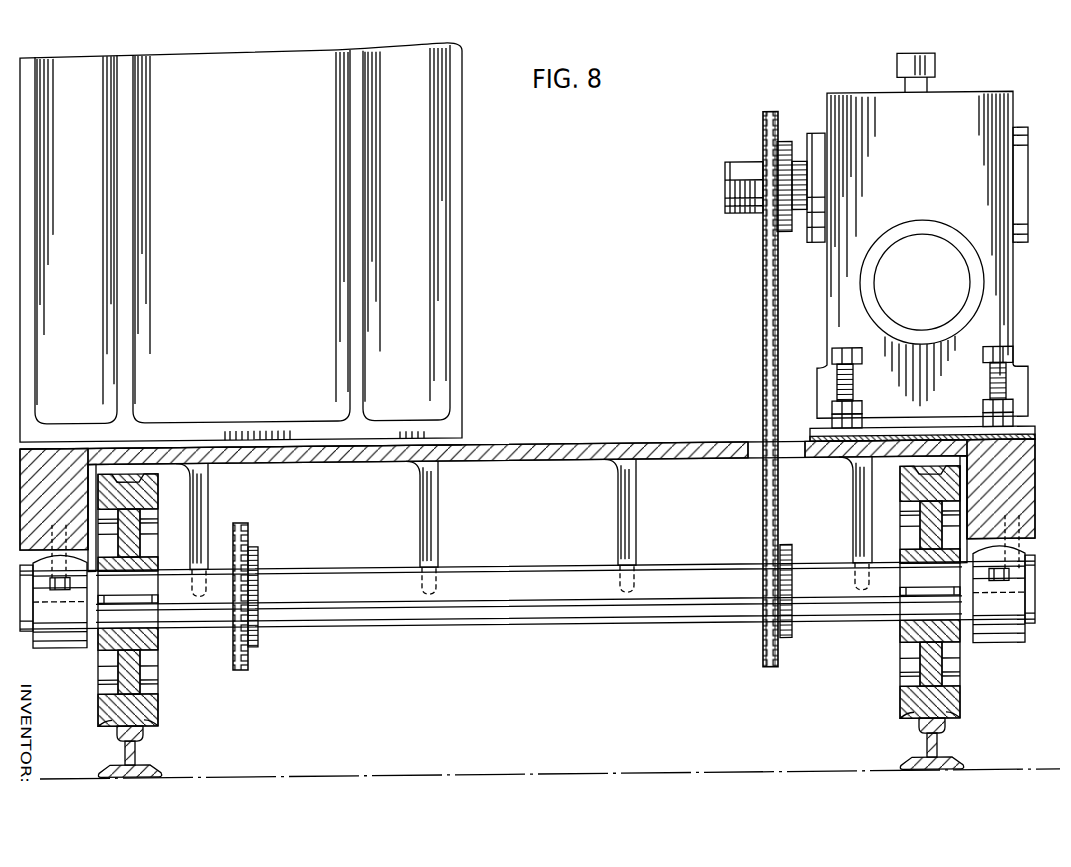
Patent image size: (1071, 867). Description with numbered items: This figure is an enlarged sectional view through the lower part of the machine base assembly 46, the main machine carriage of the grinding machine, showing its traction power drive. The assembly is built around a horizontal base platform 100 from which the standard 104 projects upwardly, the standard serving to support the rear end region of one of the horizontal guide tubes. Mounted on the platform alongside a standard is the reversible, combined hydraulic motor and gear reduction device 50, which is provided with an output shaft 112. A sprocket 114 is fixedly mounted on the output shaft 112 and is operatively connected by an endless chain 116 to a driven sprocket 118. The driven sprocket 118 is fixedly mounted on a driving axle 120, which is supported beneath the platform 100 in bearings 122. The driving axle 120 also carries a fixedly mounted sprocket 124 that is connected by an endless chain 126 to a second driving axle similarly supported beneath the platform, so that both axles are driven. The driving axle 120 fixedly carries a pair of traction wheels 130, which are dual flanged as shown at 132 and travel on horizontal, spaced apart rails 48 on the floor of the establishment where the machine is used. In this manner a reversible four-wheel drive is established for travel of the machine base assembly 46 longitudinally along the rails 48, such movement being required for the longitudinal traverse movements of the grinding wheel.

The machine base assembly 46 is at (250, 202).
The standard 104 is at (430, 231).
The combined hydraulic motor and gear reduction device 50 is at (938, 175).
The output shaft 112 is at (733, 172).
The sprocket 114 is at (785, 143).
The endless chain 116 is at (765, 379).
The driven sprocket 118 is at (790, 553).
The horizontal base platform 100 is at (528, 452).
The driving axle 120 is at (498, 566).
The endless chain 126 is at (245, 522).
The sprocket 124 is at (258, 547).
The bearings 122 is at (60, 643).
The traction wheels 130 is at (160, 699).
The flanges 132 is at (145, 721).
The rails 48 is at (145, 766).